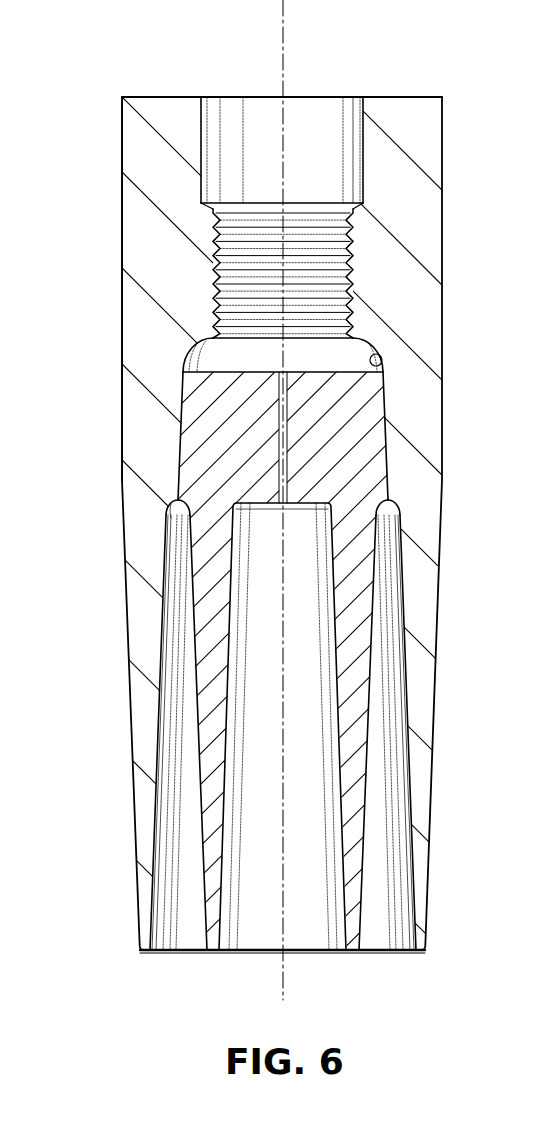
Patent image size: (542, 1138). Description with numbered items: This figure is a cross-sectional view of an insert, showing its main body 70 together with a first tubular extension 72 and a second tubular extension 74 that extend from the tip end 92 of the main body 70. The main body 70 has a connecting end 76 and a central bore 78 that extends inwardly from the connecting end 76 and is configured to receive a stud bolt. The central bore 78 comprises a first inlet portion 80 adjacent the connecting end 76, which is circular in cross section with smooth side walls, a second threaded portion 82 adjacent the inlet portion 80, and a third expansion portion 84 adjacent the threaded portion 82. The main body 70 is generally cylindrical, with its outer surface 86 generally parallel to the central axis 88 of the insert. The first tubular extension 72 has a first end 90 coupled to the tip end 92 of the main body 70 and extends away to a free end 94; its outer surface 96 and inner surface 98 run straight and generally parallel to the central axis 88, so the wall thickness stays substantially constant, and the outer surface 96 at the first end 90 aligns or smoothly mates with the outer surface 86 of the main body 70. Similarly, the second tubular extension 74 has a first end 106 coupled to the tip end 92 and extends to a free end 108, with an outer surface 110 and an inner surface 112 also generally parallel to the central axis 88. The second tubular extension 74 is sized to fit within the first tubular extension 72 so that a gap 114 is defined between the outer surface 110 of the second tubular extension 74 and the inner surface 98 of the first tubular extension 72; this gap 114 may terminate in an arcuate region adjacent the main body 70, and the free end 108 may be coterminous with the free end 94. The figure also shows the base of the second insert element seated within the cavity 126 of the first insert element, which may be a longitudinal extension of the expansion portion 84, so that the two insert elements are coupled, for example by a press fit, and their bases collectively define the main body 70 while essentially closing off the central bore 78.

The main body 70 is at (448, 152).
The first tubular extension 72 is at (130, 647).
The second tubular extension 74 is at (362, 668).
The connecting end 76 is at (425, 96).
The central bore 78 is at (262, 110).
The first inlet portion 80 is at (360, 131).
The second threaded portion 82 is at (356, 246).
The third expansion portion 84 is at (384, 366).
The outer surface 86 is at (122, 271).
The central axis 88 is at (283, 20).
The first end 90 is at (177, 499).
The tip end 92 is at (174, 507).
The free end 94 is at (153, 955).
The outer surface 96 is at (130, 739).
The inner surface 98 is at (186, 864).
The first end 106 is at (395, 510).
The free end 108 is at (333, 955).
The outer surface 110 is at (362, 772).
The inner surface 112 is at (301, 857).
The gap 114 is at (389, 599).
The cavity 126 is at (283, 360).